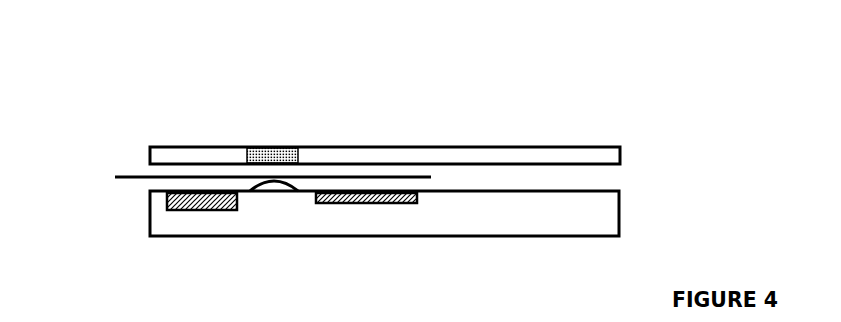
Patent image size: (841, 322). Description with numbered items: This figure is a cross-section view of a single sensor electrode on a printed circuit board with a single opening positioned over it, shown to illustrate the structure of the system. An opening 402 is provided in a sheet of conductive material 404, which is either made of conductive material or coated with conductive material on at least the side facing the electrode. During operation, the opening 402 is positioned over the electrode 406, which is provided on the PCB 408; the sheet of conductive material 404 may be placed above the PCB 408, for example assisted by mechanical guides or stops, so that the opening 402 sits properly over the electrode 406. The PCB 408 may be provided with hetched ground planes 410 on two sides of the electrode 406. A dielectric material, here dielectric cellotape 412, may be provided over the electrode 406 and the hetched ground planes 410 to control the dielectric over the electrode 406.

The opening 402 is at (289, 134).
The sheet of conductive material 404 is at (526, 134).
The electrode 406 is at (309, 176).
The PCB 408 is at (384, 213).
The hetched ground planes 410 is at (320, 213).
The dielectric cellotape 412 is at (118, 164).